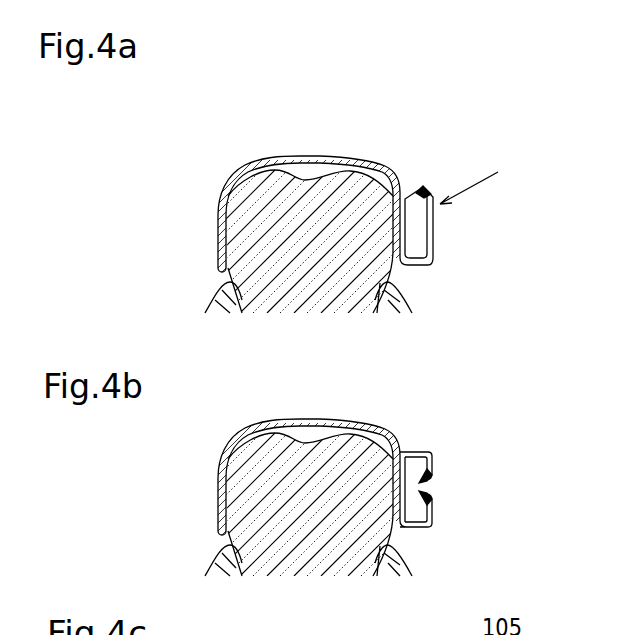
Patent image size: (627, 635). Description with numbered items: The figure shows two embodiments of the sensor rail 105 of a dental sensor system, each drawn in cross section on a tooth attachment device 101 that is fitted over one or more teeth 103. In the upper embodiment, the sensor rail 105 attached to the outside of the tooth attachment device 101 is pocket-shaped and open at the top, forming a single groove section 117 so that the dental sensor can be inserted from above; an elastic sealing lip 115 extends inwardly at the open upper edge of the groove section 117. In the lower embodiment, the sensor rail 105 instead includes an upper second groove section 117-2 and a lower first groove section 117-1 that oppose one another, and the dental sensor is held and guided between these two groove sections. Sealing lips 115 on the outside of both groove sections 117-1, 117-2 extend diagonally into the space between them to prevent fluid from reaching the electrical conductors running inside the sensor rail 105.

In FIG. 4A, the tooth attachment device 101 is at (218, 208).
In FIG. 4B, the tooth attachment device 101 is at (218, 470).
In FIG. 4A, the teeth 103 is at (297, 238).
In FIG. 4B, the teeth 103 is at (297, 501).
In FIG. 4B, the sensor rail 105 is at (443, 437).
In FIG. 4A, the sealing lip 115 is at (412, 197).
In FIG. 4B, the sealing lip 115 is at (428, 482).
In FIG. 4A, the groove section 117 is at (433, 230).
In FIG. 4B, the first groove section 117-1 is at (432, 523).
In FIG. 4B, the second groove section 117-2 is at (432, 460).